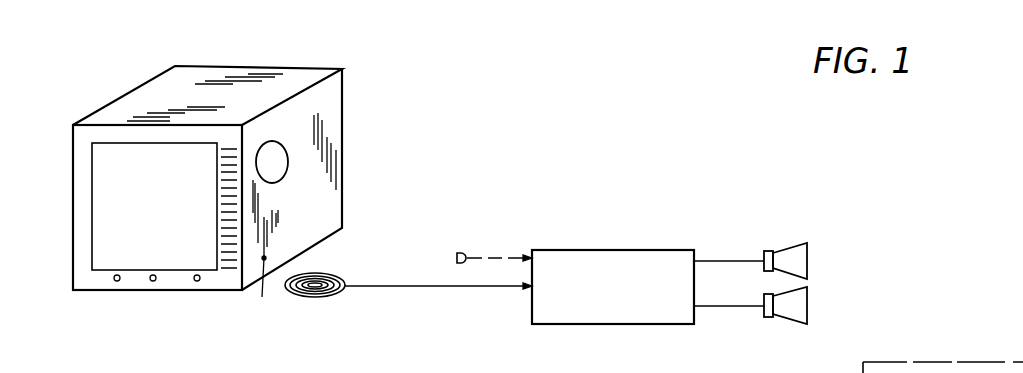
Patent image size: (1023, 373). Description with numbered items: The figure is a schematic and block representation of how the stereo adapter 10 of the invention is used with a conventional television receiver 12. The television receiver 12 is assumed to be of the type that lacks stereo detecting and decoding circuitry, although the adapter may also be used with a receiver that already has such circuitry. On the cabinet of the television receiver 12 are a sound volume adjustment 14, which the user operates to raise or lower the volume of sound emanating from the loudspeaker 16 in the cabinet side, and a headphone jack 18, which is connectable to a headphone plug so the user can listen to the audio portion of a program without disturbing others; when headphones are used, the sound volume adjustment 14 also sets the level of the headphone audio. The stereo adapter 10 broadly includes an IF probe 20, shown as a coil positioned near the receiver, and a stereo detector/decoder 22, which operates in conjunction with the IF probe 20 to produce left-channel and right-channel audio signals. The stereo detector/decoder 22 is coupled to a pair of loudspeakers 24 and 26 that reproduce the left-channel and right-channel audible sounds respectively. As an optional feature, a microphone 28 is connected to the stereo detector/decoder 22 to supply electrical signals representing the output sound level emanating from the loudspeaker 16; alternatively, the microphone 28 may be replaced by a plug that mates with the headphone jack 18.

The stereo adapter 10 is at (607, 232).
The television receiver 12 is at (152, 92).
The sound volume adjustment 14 is at (197, 282).
The loudspeaker 16 is at (279, 152).
The headphone jack 18 is at (267, 294).
The IF probe 20 is at (320, 297).
The stereo detector/decoder 22 is at (620, 324).
The loudspeaker 24 is at (788, 247).
The loudspeaker 26 is at (794, 321).
The microphone 28 is at (462, 253).